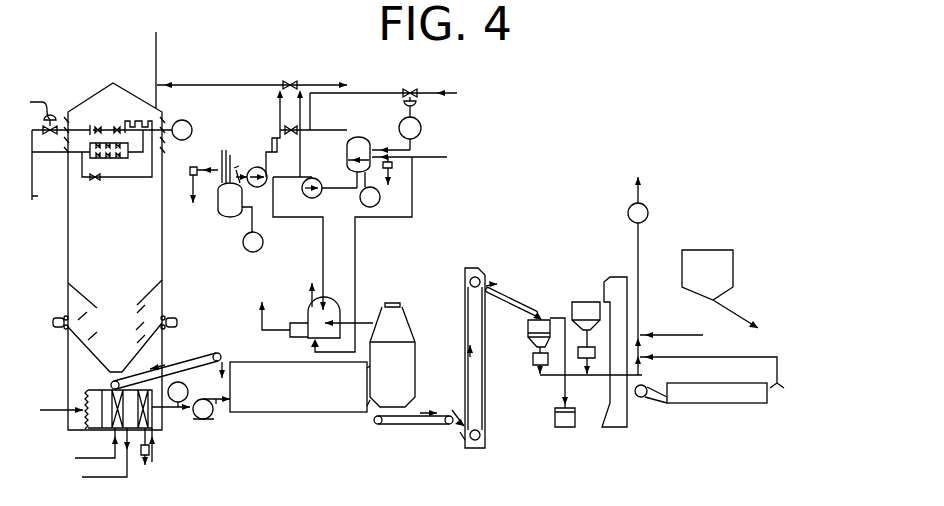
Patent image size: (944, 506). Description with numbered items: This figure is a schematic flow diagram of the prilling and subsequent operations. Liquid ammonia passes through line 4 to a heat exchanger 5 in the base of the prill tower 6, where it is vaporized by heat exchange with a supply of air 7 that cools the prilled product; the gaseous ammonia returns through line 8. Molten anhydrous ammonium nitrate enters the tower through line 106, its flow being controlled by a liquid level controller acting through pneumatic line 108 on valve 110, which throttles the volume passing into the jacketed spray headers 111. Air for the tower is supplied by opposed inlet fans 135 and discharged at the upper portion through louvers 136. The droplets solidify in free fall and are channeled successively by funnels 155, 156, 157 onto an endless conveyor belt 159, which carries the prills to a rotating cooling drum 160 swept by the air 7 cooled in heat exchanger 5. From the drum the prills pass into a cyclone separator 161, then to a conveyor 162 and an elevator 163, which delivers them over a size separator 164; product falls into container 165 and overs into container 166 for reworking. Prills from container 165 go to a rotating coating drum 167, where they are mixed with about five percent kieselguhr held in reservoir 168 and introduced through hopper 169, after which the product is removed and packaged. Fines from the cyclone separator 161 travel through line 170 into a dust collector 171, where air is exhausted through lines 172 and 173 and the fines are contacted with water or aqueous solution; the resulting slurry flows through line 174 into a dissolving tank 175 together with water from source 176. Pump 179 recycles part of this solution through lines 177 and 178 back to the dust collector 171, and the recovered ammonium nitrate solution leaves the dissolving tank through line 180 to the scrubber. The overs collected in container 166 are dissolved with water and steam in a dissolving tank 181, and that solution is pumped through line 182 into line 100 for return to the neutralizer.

The line 4 is at (98, 478).
The heat exchanger 5 is at (84, 393).
The prill tower 6 is at (67, 235).
The supply of air 7 is at (53, 410).
The line 8 is at (85, 456).
The line 100 is at (157, 63).
The line 106 is at (92, 169).
The pneumatic line 108 is at (43, 102).
The valve 110 is at (54, 117).
The headers 111 is at (109, 128).
The inlet fans 135 is at (54, 319).
The louvers 136 is at (168, 157).
The funnel 155 is at (72, 282).
The funnel 156 is at (87, 320).
The funnel 157 is at (89, 341).
The endless conveyor belt 159 is at (188, 352).
The cooling drum 160 is at (276, 357).
The cyclone separator 161 is at (412, 373).
The conveyor 162 is at (414, 429).
The elevator 163 is at (463, 296).
The size separator 164 is at (522, 283).
The container 165 is at (528, 336).
The container 166 is at (557, 427).
The rotating coating drum 167 is at (705, 401).
The reservoir 168 is at (718, 256).
The hopper 169 is at (598, 301).
The line 170 is at (373, 323).
The dust collector 171 is at (345, 292).
The line 172 is at (262, 318).
The line 173 is at (311, 302).
The line 174 is at (412, 199).
The dissolving tank 175 is at (377, 133).
The source 176 is at (436, 92).
The line 177 is at (324, 191).
The line 178 is at (306, 222).
The pump 179 is at (325, 178).
The line 180 is at (310, 85).
The dissolving tank 181 is at (218, 204).
The line 182 is at (280, 112).